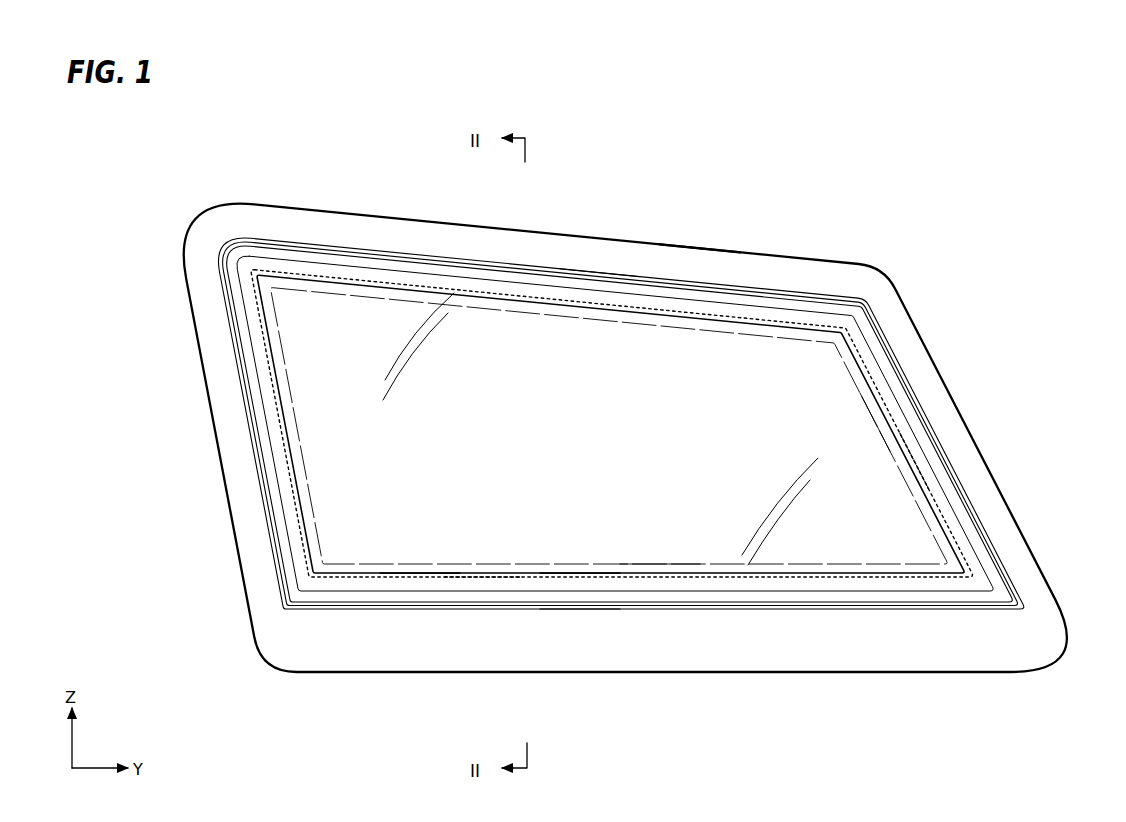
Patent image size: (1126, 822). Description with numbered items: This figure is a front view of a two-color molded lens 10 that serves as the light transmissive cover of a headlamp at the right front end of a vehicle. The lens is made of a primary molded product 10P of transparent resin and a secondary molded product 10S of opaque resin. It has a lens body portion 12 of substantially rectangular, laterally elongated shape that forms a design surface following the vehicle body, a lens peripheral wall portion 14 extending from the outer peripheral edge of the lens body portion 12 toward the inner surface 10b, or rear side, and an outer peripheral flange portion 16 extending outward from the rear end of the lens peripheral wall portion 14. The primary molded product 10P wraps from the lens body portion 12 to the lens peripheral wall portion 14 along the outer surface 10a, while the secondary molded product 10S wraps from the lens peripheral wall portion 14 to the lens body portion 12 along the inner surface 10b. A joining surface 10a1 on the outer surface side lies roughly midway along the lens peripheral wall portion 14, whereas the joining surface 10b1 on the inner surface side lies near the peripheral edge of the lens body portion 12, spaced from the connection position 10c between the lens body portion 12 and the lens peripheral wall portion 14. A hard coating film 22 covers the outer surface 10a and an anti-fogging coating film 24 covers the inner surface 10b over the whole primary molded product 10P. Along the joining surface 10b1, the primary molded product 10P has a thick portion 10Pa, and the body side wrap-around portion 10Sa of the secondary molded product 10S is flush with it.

The two-color molded lens 10 is at (912, 163).
The primary molded product 10P is at (597, 277).
The secondary molded product 10S is at (703, 247).
The thick portion 10Pa is at (417, 568).
The body side wrap-around portion 10Sa is at (480, 567).
The outer surface 10a is at (832, 397).
The hard coating film 22 is at (950, 388).
The inner surface 10b is at (867, 480).
The anti-fogging coating film 24 is at (992, 461).
The joining surface 10b1 is at (577, 572).
The connection position 10c is at (657, 563).
The joining surface 10a1 is at (577, 605).
The lens body portion 12 is at (322, 358).
The lens peripheral wall portion 14 is at (257, 455).
The outer peripheral flange portion 16 is at (253, 552).